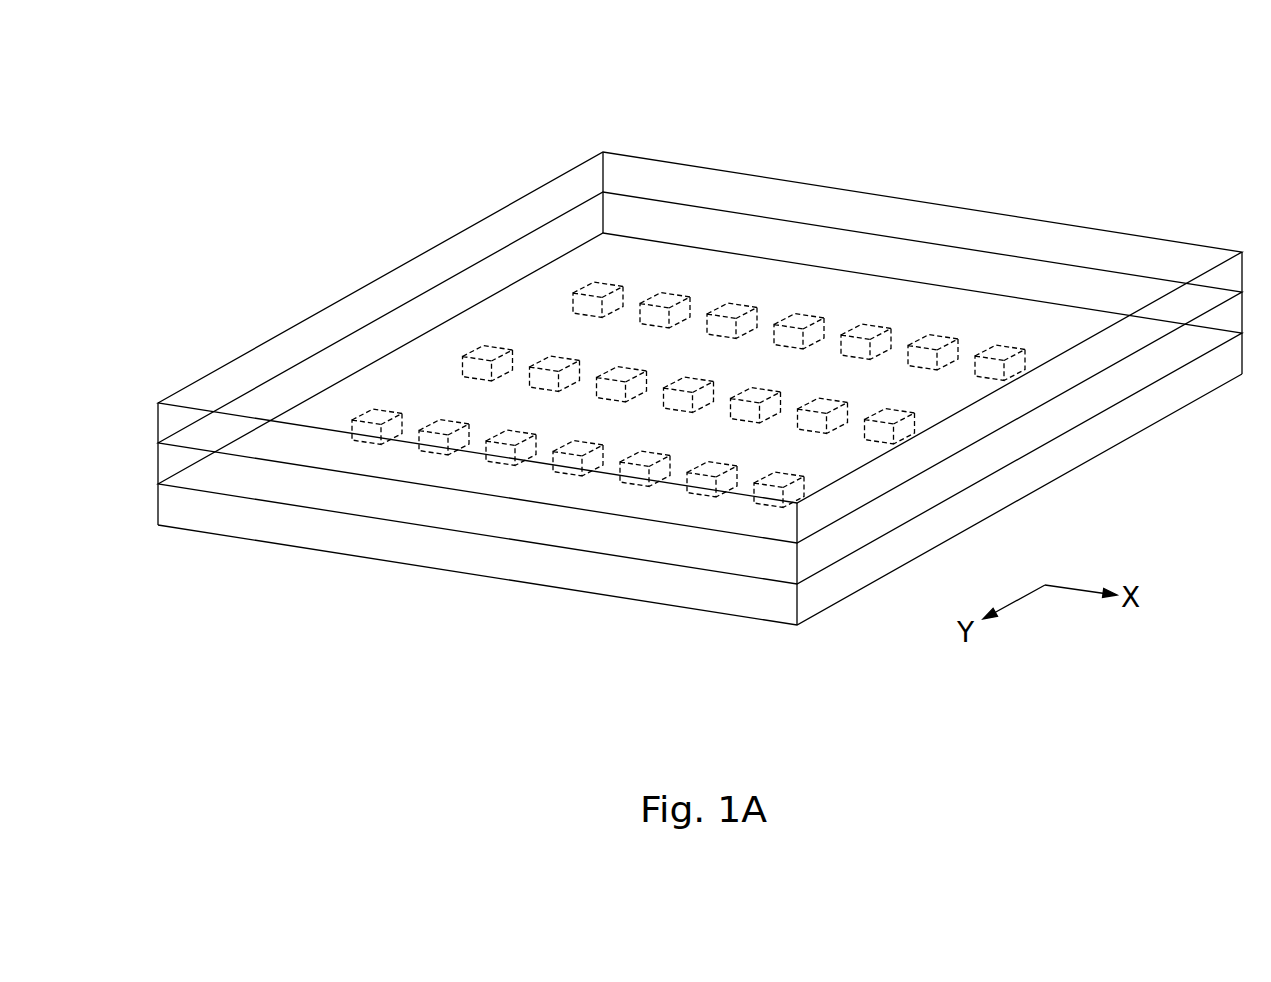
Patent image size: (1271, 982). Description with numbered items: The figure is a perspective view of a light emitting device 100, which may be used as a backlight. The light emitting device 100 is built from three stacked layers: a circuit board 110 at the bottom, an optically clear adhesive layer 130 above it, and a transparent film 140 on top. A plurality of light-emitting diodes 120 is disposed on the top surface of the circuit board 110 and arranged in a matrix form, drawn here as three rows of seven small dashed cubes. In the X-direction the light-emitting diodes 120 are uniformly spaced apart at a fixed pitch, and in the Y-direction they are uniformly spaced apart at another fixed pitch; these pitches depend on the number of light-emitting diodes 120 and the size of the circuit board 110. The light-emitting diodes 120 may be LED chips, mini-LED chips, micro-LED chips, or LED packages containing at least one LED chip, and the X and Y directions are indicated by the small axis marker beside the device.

The light emitting device 100 is at (121, 64).
The circuit board 110 is at (158, 506).
The light-emitting diodes 120 is at (375, 410).
The optically clear adhesive layer 130 is at (158, 467).
The transparent film 140 is at (158, 431).